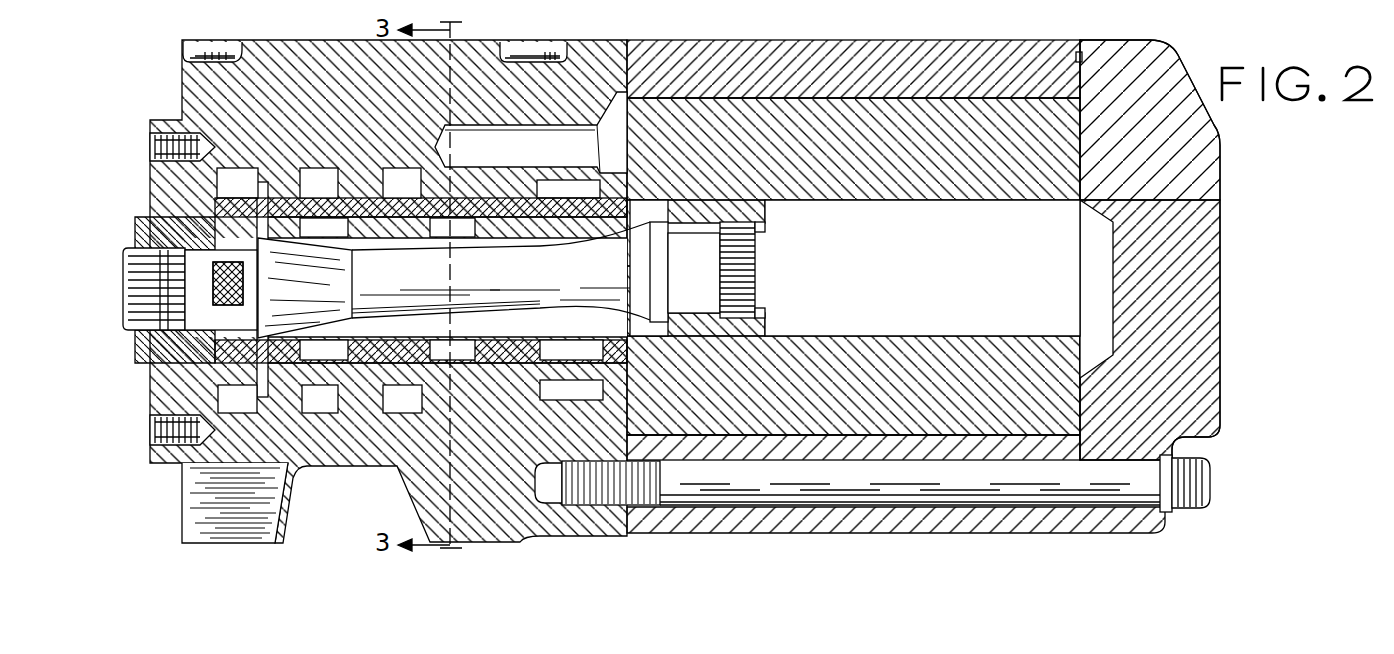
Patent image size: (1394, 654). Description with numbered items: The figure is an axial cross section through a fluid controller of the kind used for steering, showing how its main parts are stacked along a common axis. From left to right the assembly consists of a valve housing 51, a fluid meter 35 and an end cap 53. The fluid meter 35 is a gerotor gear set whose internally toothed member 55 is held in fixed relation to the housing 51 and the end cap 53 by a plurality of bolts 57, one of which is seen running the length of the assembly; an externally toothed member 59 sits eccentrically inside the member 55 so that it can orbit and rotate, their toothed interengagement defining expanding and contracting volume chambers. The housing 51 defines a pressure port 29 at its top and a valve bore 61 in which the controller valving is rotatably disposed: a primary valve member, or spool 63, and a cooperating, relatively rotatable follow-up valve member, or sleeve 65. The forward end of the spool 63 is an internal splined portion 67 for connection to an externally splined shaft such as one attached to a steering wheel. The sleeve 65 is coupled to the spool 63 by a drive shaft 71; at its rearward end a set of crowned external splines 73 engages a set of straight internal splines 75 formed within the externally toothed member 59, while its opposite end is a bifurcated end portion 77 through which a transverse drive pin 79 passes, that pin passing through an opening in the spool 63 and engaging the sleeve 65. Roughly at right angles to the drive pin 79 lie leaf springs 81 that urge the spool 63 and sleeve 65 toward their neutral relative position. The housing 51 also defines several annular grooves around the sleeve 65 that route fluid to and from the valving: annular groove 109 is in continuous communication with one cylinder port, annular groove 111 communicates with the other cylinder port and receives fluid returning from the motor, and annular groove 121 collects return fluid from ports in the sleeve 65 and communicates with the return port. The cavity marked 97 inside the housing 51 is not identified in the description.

The pressure port 29 is at (657, 7).
The fluid meter 35 is at (952, 266).
The valve housing 51 is at (268, 50).
The end cap 53 is at (1198, 182).
The internally toothed member 55 is at (985, 62).
The bolts 57 is at (1190, 480).
The externally toothed member 59 is at (938, 200).
The valve bore 61 is at (510, 376).
The primary valve member (spool) 63 is at (562, 354).
The follow-up valve member (sleeve) 65 is at (352, 199).
The internal splined portion 67 is at (145, 282).
The drive shaft 71 is at (548, 280).
The crowned external splines 73 is at (756, 266).
The straight internal splines 75 is at (766, 227).
The bifurcated end portion 77 is at (328, 292).
The transverse drive pin 79 is at (268, 199).
The leaf springs 81 is at (568, 186).
The chamber 97 is at (531, 132).
The annular groove 109 is at (414, 402).
The annular groove 111 is at (316, 402).
The annular groove 121 is at (236, 402).